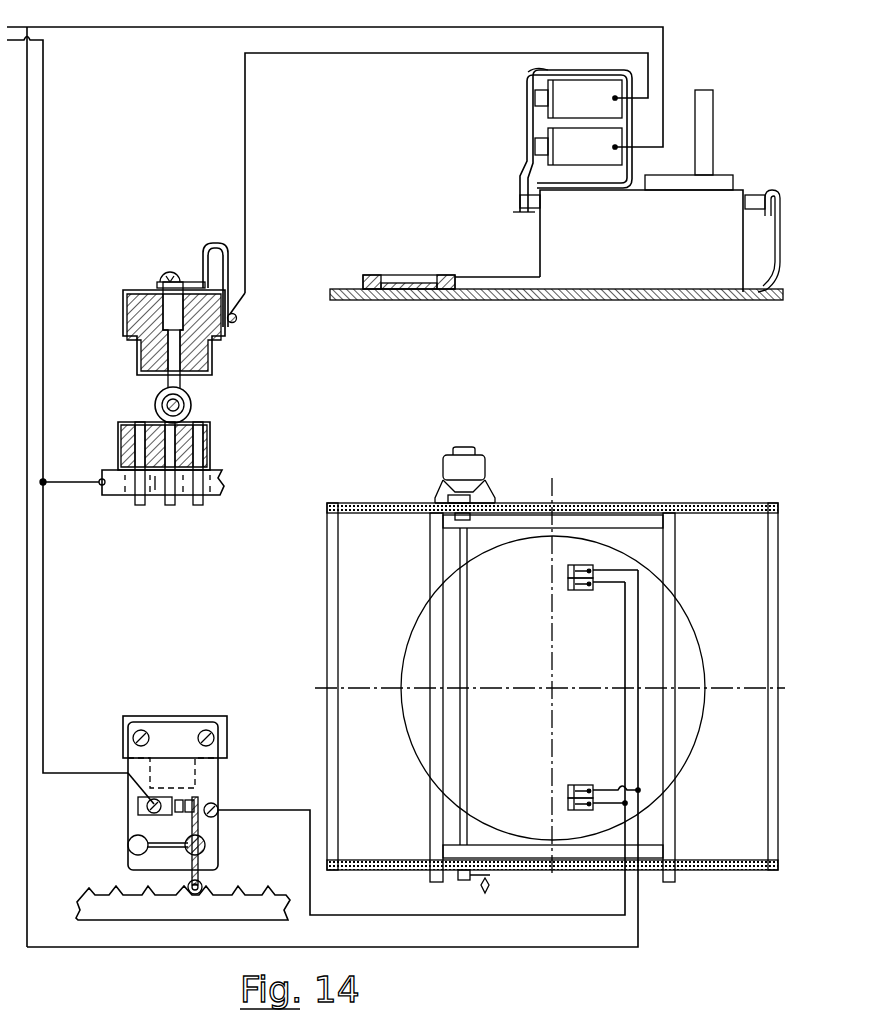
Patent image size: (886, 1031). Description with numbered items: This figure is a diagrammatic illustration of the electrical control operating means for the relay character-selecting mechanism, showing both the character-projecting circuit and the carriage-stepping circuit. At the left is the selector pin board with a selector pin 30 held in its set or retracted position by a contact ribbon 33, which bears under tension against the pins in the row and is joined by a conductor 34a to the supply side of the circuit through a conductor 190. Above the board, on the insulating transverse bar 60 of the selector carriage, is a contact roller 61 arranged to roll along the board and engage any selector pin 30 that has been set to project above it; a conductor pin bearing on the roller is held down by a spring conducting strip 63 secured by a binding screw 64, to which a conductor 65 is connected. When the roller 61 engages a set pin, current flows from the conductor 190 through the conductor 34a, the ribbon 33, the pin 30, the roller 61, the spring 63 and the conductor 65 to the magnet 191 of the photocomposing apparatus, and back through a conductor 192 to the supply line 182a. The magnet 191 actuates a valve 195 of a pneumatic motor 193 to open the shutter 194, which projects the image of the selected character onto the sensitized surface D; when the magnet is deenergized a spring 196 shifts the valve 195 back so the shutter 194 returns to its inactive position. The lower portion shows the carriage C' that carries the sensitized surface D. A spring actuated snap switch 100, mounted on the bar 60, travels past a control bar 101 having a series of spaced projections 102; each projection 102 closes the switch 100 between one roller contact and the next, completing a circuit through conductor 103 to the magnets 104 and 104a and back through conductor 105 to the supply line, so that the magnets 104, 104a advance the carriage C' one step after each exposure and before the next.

The supply line 182a is at (602, 29).
The conductor 190 is at (43, 338).
The conductor 65 is at (245, 236).
The conductor 192 is at (663, 74).
The magnet 191 is at (578, 122).
The pneumatic motor 193 is at (599, 191).
The shutter 194 is at (418, 271).
The valve 195 is at (752, 193).
The spring 196 is at (778, 190).
The spring conducting strip 63 is at (203, 262).
The binding screw 64 is at (236, 323).
The selector pin 30 is at (166, 380).
The contact roller 61 is at (192, 410).
The contact ribbon 33 is at (104, 472).
The conductor 34a is at (93, 485).
The transverse bar 60 is at (170, 718).
The snap switch 100 is at (135, 824).
The projection 102 is at (134, 892).
The control bar 101 is at (135, 919).
The conductor 103 is at (355, 915).
The conductor 105 is at (477, 942).
The magnet 104 is at (576, 784).
The magnet 104a is at (572, 592).
The sensitized surface D is at (506, 692).
The carriage C' is at (552, 698).